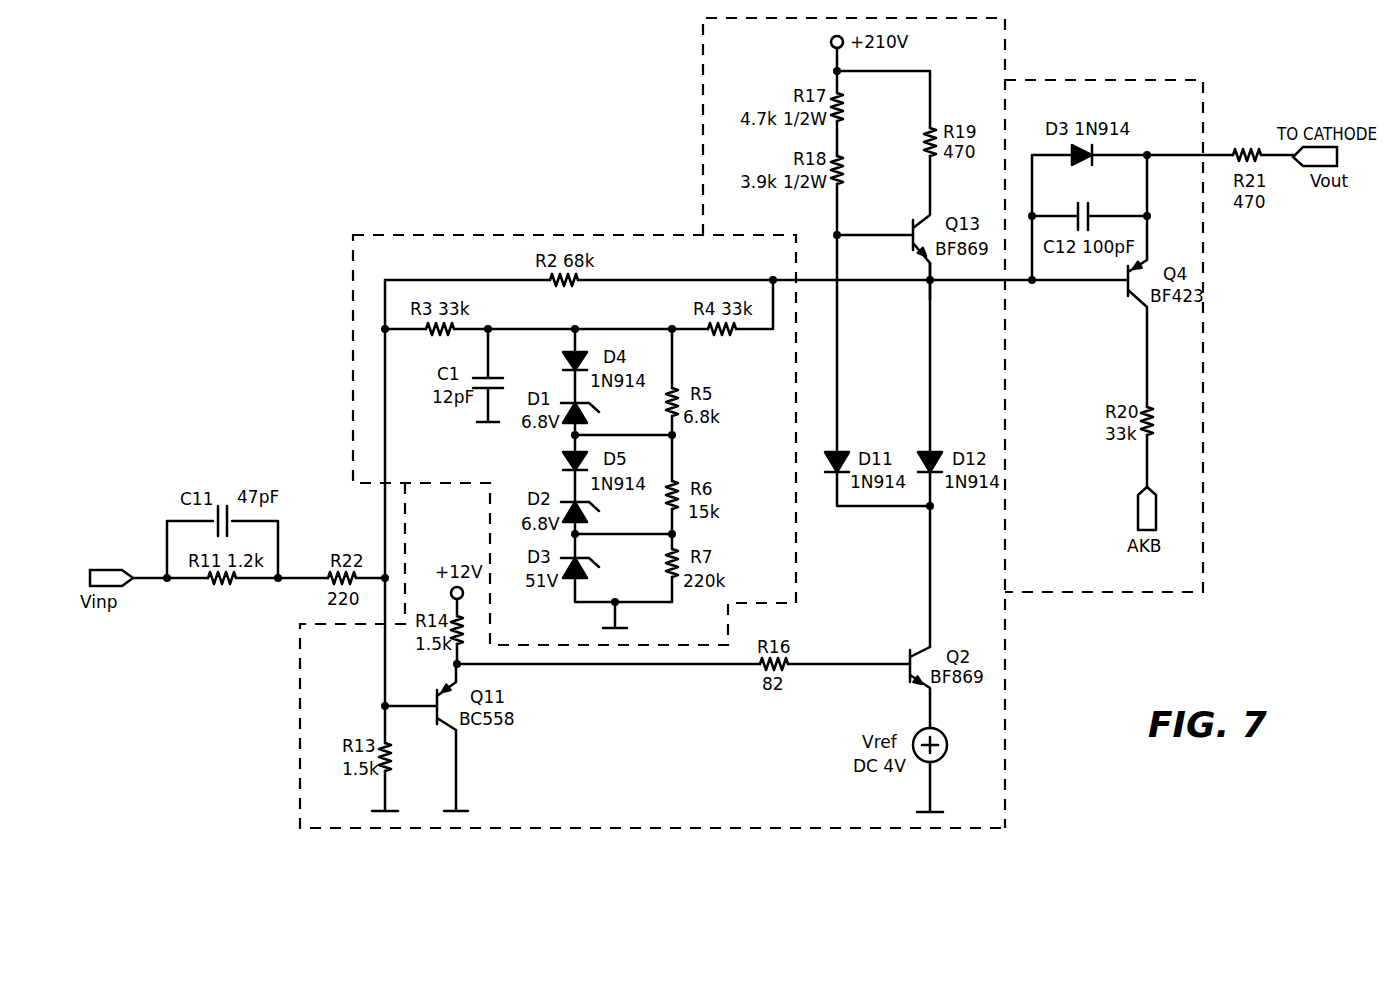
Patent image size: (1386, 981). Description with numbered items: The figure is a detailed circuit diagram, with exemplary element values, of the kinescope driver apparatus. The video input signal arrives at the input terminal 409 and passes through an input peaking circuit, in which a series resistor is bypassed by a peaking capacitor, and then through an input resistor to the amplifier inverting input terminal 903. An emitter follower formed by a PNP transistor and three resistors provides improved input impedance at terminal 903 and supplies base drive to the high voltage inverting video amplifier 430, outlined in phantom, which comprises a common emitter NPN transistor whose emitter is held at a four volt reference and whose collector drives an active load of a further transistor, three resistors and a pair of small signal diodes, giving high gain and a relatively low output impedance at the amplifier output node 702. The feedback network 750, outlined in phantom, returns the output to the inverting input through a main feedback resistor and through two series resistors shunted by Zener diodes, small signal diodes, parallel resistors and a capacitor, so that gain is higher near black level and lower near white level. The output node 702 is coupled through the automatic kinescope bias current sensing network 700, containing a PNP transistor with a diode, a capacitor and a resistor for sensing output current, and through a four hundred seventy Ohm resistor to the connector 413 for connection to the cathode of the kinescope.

The input terminal 409 is at (122, 543).
The amplifier inverting input terminal 903 is at (383, 576).
The feedback network 750 is at (462, 235).
The high voltage inverting video amplifier 430 is at (703, 145).
The amplifier output node 702 is at (932, 282).
The automatic kinescope bias current sensing network 700 is at (1203, 390).
The connector 413 is at (1337, 158).